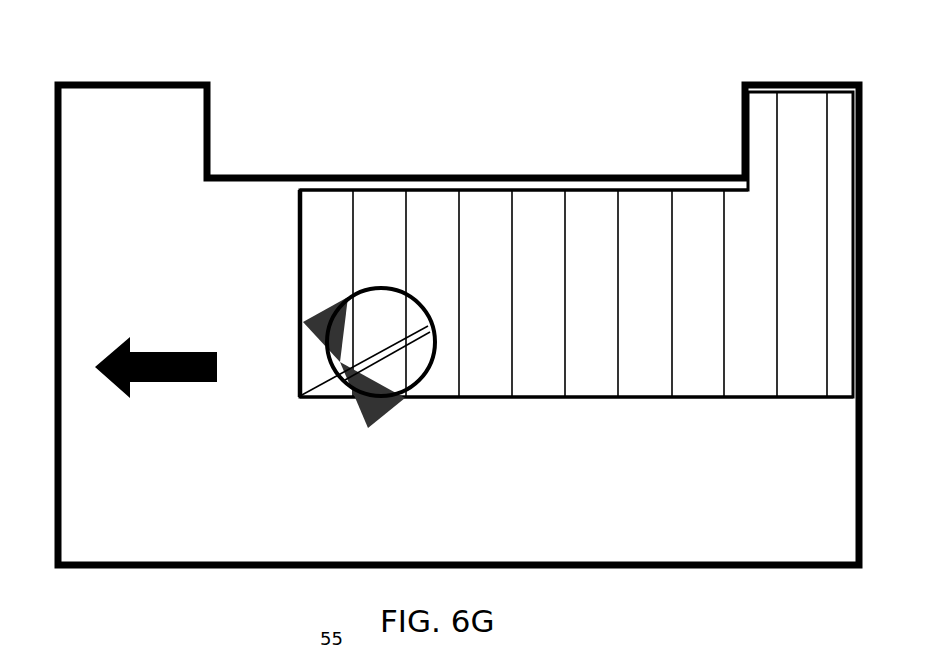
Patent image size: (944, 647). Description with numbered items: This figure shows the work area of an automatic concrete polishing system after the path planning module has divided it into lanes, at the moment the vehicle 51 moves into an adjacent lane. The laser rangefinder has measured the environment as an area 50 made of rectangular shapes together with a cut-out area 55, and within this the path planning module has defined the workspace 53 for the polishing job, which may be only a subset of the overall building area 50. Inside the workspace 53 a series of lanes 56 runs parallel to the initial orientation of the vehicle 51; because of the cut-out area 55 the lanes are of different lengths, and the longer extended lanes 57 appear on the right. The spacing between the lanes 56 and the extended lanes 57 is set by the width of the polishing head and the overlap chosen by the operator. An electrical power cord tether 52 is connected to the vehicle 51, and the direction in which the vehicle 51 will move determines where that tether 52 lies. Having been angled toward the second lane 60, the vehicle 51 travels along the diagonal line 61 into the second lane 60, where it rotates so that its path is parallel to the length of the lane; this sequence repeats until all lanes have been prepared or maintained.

The area 50 is at (576, 292).
The vehicle 51 is at (397, 423).
The electrical power cord tether 52 is at (173, 403).
The workspace 53 is at (665, 413).
The cut-out area 55 is at (458, 286).
The lanes 56 is at (512, 345).
The extended lanes 57 is at (777, 337).
The second lane 60 is at (360, 215).
The diagonal line 61 is at (312, 398).